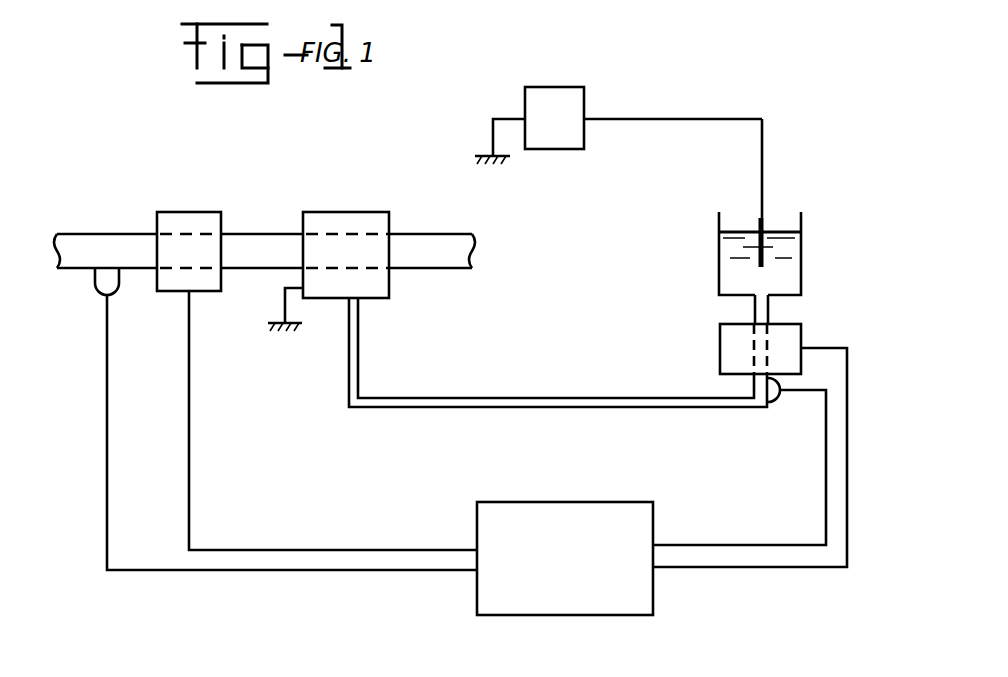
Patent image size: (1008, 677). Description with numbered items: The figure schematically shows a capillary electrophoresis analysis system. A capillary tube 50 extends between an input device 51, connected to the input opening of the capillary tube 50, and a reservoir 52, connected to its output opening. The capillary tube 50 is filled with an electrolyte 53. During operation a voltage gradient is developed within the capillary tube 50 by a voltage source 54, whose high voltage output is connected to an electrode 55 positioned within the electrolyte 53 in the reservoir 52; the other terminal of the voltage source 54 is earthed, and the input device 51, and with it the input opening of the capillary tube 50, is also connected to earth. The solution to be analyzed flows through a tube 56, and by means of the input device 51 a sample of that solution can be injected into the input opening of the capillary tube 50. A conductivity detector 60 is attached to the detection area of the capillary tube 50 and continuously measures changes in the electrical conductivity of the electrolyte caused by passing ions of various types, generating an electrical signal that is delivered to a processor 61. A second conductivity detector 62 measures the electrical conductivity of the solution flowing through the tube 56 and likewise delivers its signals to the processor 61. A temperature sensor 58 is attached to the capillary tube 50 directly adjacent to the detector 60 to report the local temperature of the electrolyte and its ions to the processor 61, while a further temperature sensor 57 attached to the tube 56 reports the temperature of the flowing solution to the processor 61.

The capillary tube 50 is at (550, 400).
The input device 51 is at (337, 222).
The reservoir 52 is at (803, 256).
The electrolyte 53 is at (733, 250).
The voltage source 54 is at (557, 98).
The electrode 55 is at (763, 222).
The tube 56 is at (428, 257).
The temperature sensor 57 is at (102, 280).
The temperature sensor 58 is at (783, 391).
The conductivity detector 60 is at (792, 333).
The processor 61 is at (592, 515).
The second conductivity detector 62 is at (183, 218).